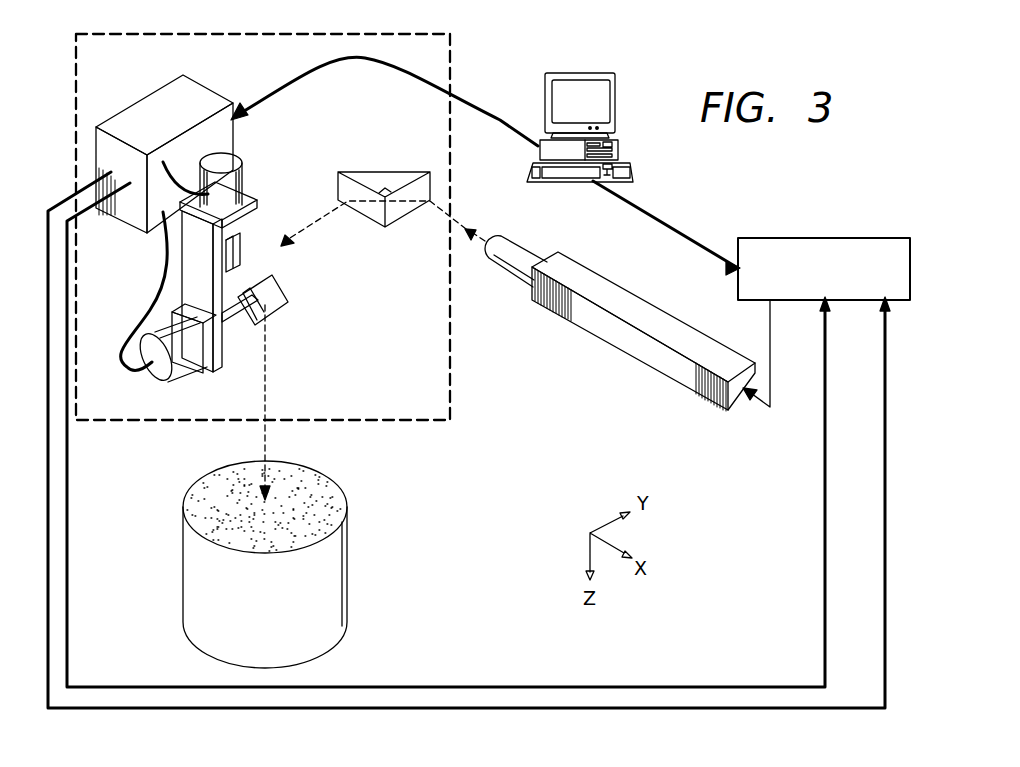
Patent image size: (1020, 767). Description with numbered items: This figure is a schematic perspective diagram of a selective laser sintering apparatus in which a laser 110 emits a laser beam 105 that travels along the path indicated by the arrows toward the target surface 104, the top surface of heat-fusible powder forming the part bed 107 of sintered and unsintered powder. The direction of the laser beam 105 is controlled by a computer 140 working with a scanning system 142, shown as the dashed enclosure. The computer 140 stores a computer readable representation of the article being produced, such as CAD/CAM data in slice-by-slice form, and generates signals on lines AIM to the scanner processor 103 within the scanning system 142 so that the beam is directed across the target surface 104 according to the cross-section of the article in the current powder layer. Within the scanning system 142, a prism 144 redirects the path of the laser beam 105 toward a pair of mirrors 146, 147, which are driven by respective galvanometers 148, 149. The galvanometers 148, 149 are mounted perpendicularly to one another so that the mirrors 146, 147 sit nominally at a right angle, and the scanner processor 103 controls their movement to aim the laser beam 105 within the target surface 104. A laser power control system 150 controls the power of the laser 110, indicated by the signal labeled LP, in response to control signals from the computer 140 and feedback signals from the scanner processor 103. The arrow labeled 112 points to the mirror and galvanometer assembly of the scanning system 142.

The scanner processor 103 is at (127, 117).
The target surface 104 is at (200, 485).
The laser beam 105 is at (267, 387).
The part bed 107 is at (350, 577).
The laser 110 is at (607, 333).
The scanning system 112 is at (310, 275).
The computer 140 is at (580, 73).
The scanning system 142 is at (398, 425).
The prism 144 is at (385, 177).
The mirror 146 is at (240, 257).
The mirror 147 is at (280, 303).
The galvanometer 148 is at (237, 163).
The galvanometer 149 is at (157, 377).
The laser power control system 150 is at (825, 235).
The lines AIM is at (285, 82).
The laser power signal LP is at (753, 403).